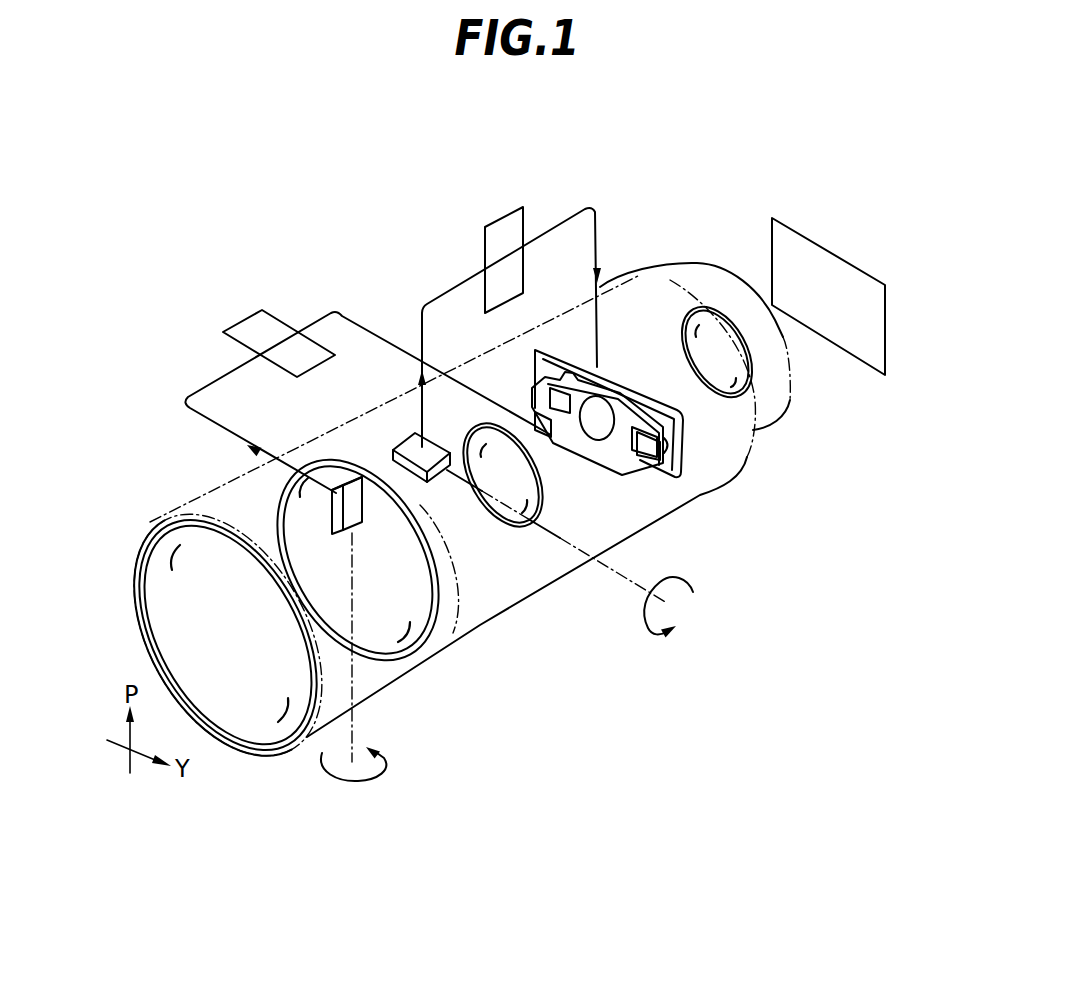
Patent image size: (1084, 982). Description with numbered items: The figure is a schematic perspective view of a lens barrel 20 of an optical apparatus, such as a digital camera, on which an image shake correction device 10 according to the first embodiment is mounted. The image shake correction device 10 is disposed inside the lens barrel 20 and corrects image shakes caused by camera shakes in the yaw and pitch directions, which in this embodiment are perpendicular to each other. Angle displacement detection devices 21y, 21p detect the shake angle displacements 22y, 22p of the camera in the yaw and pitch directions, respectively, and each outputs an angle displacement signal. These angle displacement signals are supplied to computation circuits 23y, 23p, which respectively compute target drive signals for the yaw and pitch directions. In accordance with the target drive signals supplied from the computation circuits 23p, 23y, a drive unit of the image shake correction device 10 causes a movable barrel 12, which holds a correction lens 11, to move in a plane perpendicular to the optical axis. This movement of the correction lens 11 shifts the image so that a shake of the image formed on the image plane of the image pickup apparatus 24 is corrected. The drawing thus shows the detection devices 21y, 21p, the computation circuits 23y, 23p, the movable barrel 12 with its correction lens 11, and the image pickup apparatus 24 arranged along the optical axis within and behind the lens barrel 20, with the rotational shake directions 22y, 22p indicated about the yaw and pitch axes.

The image shake correction device 10 is at (626, 392).
The correction lens 11 is at (597, 433).
The movable barrel 12 is at (624, 448).
The lens barrel 20 is at (407, 677).
The angle displacement detection device 21y is at (347, 477).
The angle displacement detection device 21p is at (413, 433).
The shake angle displacement 22y is at (383, 771).
The shake angle displacement 22p is at (648, 631).
The computation circuit 23y is at (270, 312).
The computation circuit 23p is at (512, 212).
The image pickup apparatus 24 is at (845, 260).